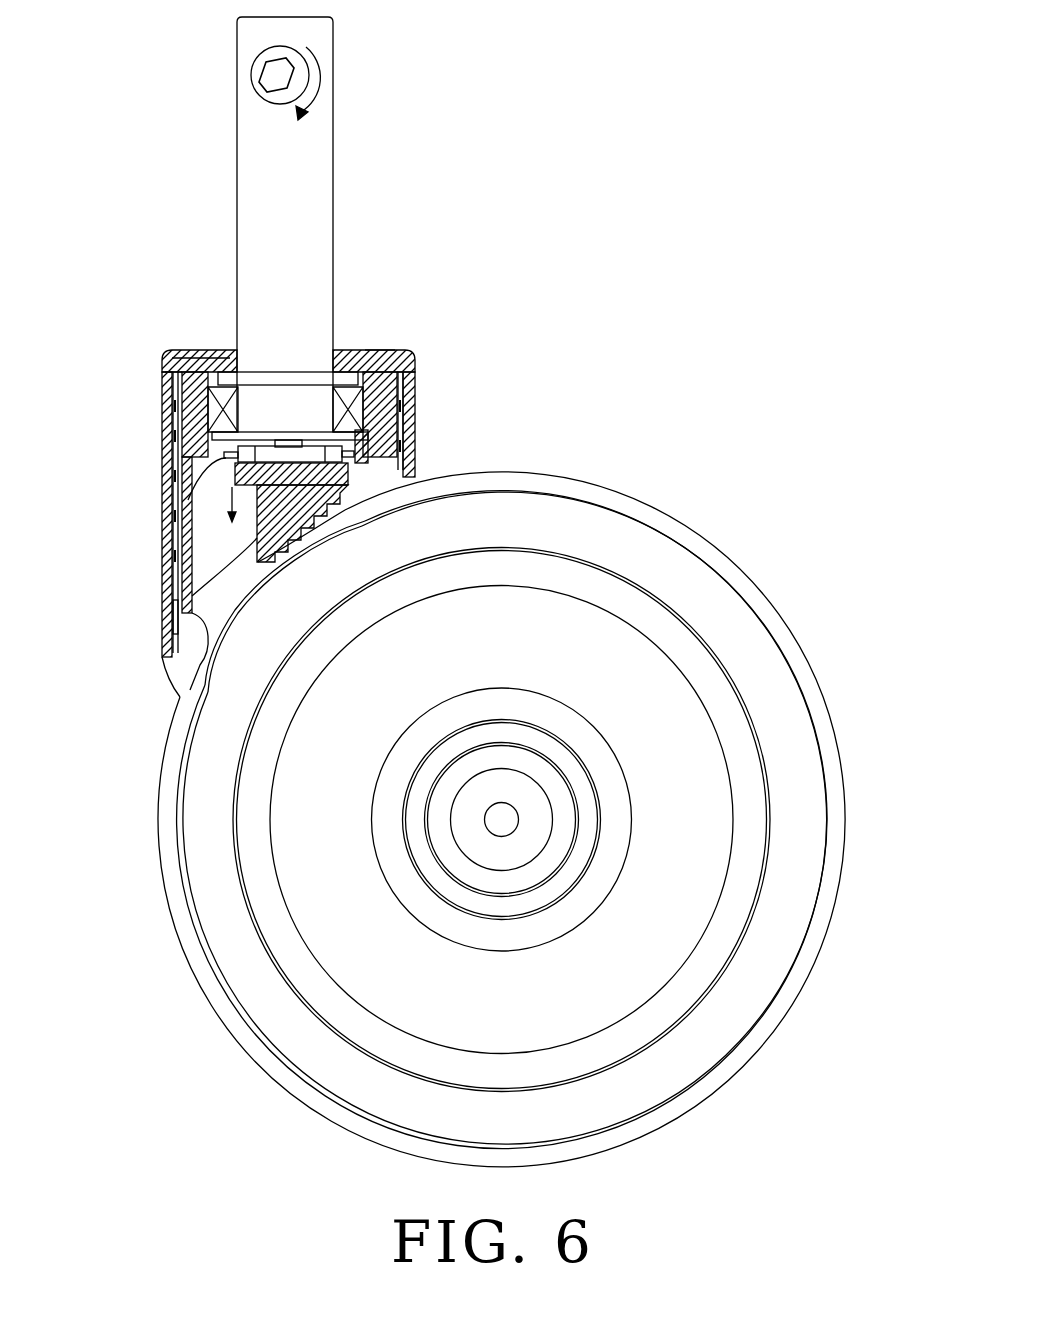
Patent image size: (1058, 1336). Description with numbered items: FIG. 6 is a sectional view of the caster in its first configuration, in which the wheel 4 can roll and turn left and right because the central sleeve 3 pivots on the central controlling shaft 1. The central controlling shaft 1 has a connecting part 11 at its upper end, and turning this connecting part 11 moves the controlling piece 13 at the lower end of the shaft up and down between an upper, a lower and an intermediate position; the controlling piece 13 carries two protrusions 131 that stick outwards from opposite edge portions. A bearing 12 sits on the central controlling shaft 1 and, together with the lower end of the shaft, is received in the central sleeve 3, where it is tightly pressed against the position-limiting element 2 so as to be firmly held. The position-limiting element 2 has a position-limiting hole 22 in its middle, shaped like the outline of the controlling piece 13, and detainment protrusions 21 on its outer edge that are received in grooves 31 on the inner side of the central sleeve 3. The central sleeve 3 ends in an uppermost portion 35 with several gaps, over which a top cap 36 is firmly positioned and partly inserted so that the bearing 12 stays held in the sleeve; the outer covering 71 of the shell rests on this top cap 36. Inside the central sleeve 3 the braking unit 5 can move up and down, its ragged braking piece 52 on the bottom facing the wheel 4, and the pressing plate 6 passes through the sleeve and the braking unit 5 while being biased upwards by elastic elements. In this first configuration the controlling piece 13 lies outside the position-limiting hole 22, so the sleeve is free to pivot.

The central controlling shaft 1 is at (314, 212).
The connecting part 11 is at (287, 73).
The bearing 12 is at (205, 350).
The controlling piece 13 is at (296, 448).
The protrusions 131 is at (270, 447).
The position-limiting element 2 is at (188, 505).
The detainment protrusions 21 is at (176, 412).
The position-limiting hole 22 is at (405, 447).
The central sleeve 3 is at (415, 413).
The grooves 31 is at (186, 462).
The uppermost portion 35 is at (408, 365).
The top cap 36 is at (156, 372).
The wheel 4 is at (788, 735).
The braking unit 5 is at (388, 492).
The ragged braking piece 52 is at (173, 605).
The pressing plate 6 is at (257, 528).
The outer covering 71 is at (378, 348).